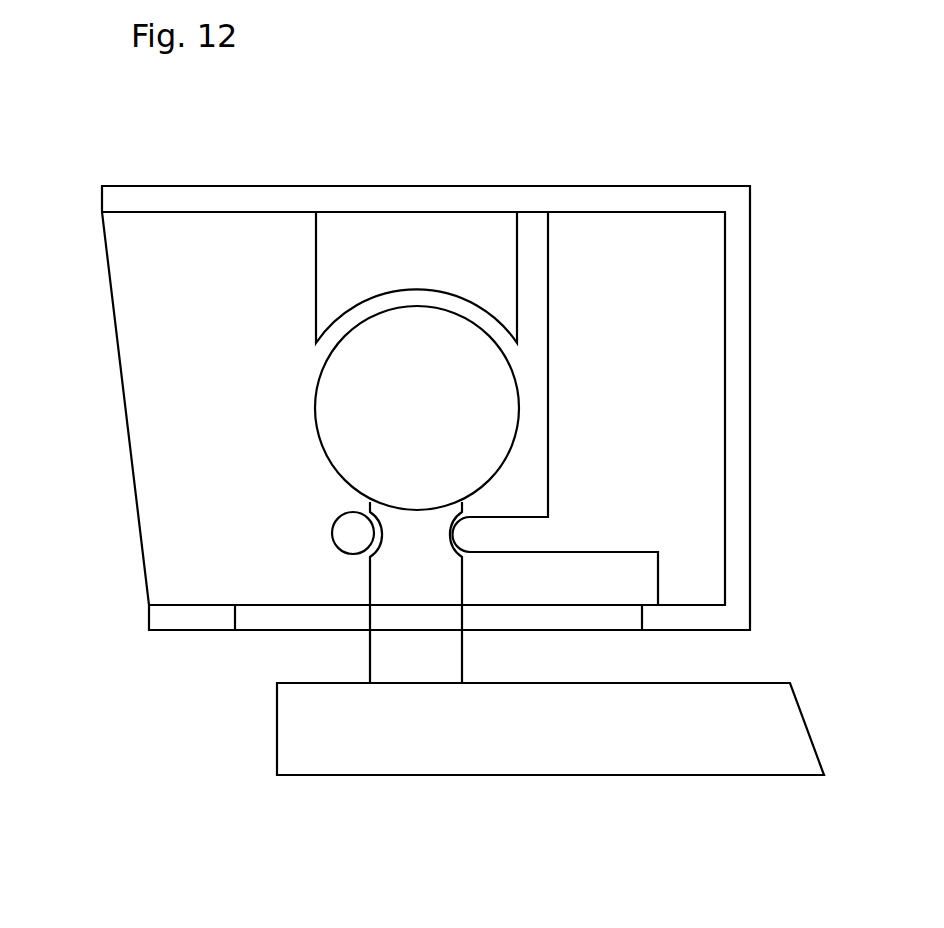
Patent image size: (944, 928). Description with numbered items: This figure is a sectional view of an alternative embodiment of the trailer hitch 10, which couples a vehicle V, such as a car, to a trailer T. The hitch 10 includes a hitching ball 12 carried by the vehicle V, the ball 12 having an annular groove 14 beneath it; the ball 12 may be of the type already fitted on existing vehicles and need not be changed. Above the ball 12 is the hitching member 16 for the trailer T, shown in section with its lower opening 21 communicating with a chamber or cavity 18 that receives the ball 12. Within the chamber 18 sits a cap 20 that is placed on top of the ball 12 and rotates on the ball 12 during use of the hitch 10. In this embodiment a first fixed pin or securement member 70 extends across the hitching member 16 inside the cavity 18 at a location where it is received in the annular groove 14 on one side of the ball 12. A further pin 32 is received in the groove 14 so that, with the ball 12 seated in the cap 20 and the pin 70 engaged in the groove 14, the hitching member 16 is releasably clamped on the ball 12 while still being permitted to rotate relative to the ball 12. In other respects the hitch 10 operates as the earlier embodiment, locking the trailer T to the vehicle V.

The trailer hitch 10 is at (605, 132).
The hitching ball 12 is at (315, 415).
The annular groove 14 is at (342, 521).
The hitching member 16 is at (367, 186).
The chamber or cavity 18 is at (147, 416).
The cap 20 is at (457, 245).
The lower opening 21 is at (253, 632).
The pin 32 is at (333, 541).
The first fixed pin or securement member 70 is at (497, 540).
The trailer T is at (282, 186).
The vehicle V is at (552, 777).